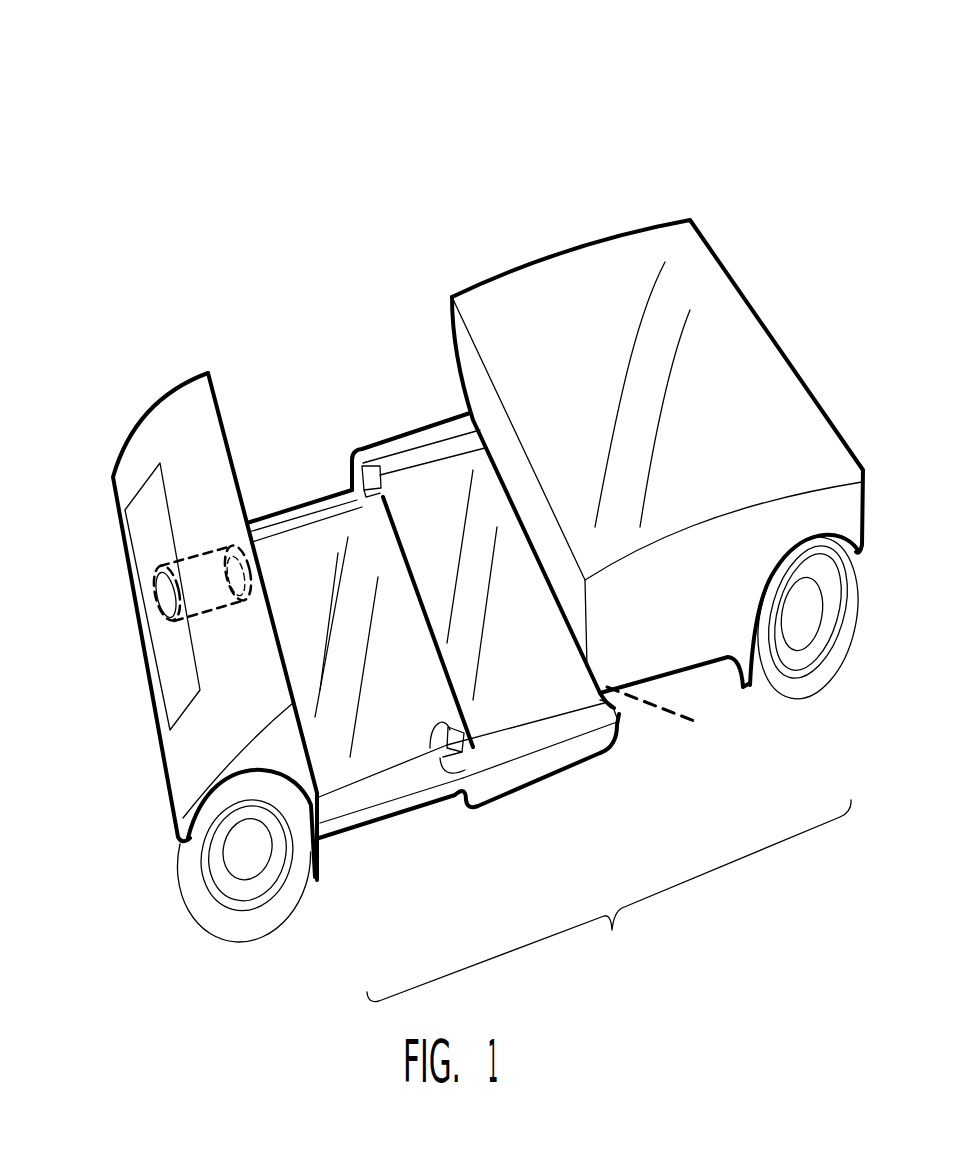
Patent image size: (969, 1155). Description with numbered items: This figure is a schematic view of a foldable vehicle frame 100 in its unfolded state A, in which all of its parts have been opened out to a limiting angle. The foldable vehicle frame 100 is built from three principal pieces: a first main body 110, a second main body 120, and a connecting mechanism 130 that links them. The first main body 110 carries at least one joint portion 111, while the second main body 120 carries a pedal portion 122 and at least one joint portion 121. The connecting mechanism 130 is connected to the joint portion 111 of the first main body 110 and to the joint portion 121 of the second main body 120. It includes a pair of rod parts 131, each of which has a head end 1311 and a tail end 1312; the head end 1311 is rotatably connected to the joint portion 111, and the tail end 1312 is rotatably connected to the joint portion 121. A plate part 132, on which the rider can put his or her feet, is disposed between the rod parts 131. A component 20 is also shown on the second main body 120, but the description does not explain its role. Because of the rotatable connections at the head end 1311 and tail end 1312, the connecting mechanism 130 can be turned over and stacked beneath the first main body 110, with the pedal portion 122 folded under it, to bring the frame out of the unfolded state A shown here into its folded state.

The unfolded state A is at (145, 207).
The foldable vehicle frame 100 is at (609, 901).
The first main body 110 is at (613, 287).
The joint portion 111 is at (697, 721).
The second main body 120 is at (197, 410).
The cylinder 20 is at (157, 600).
The joint portion 121 is at (443, 722).
The pedal portion 122 is at (305, 570).
The connecting mechanism 130 is at (408, 360).
The rod parts 131 is at (397, 450).
The plate part 132 is at (493, 617).
The head end 1311 is at (448, 768).
The tail end 1312 is at (618, 712).